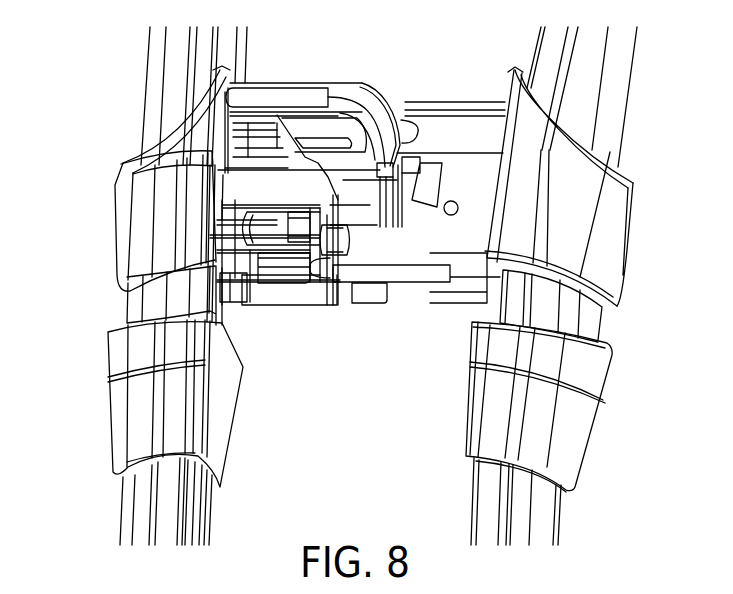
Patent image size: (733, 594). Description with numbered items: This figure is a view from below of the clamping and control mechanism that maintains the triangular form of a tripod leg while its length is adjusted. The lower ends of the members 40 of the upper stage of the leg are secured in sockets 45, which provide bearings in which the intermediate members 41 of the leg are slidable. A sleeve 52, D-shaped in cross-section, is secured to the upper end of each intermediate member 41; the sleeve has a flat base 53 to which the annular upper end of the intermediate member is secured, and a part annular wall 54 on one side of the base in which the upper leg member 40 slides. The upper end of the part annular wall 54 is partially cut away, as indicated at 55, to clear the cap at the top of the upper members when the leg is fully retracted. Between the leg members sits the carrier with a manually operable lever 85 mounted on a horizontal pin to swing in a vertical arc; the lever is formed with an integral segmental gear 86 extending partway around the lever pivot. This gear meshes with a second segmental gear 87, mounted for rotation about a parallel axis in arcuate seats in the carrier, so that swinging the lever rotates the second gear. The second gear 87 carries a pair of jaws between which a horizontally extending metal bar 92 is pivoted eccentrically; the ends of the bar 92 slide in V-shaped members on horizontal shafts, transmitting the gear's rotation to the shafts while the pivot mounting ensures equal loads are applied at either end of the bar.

The member of the upper stage of the leg 40 is at (147, 72).
The intermediate member of the leg 41 is at (122, 520).
The socket 45 is at (110, 438).
The sleeve 52 is at (453, 89).
The flat base 53 is at (238, 77).
The part annular wall 54 is at (116, 223).
The cut away portion 55 is at (123, 166).
The manually operable lever 85 is at (355, 95).
The segmental gear 86 is at (350, 217).
The second segmental gear 87 is at (363, 300).
The metal bar 92 is at (407, 283).